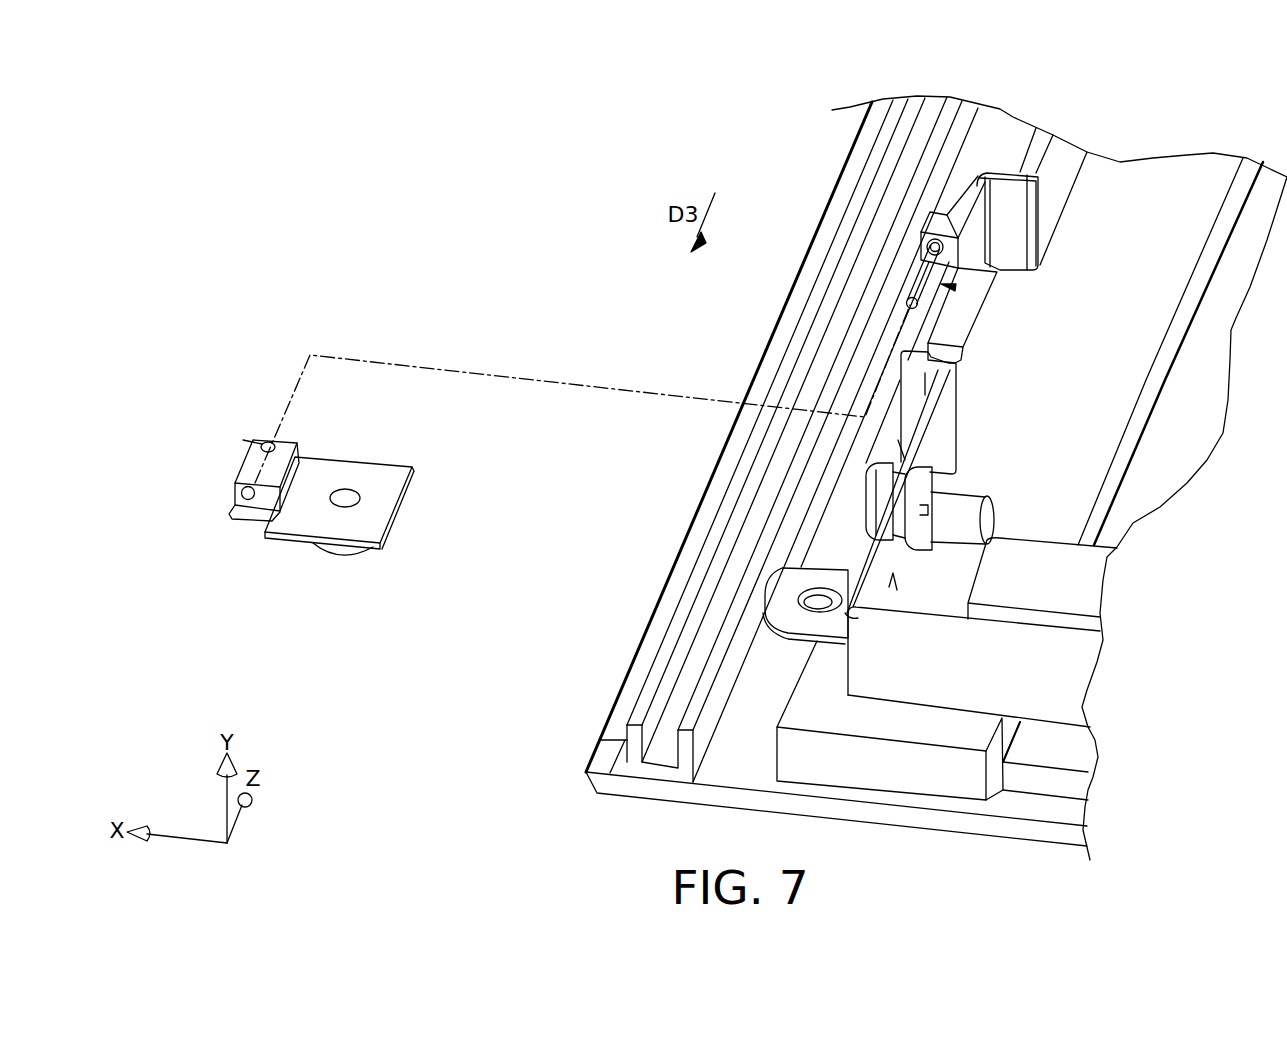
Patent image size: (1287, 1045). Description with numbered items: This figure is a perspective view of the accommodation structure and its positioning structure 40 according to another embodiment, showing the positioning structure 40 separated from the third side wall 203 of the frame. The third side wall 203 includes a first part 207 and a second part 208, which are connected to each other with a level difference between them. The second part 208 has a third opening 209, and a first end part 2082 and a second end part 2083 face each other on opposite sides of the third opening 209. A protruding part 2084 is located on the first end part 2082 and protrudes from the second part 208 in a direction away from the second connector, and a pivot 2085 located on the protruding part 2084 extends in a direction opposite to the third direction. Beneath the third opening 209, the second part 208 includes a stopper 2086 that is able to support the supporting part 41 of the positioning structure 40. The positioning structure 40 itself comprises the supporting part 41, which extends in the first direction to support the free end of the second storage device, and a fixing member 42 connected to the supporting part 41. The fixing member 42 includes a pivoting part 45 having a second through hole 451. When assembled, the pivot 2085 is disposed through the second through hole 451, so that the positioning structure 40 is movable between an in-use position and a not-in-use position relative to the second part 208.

The third side wall 203 is at (868, 556).
The first part 207 is at (1053, 177).
The second part 208 is at (978, 205).
The protruding part 2084 is at (947, 223).
The first end part 2082 is at (1010, 213).
The pivot 2085 is at (908, 293).
The third opening 209 is at (958, 288).
The stopper 2086 is at (942, 327).
The second end part 2083 is at (925, 378).
The positioning structure 40 is at (413, 520).
The supporting part 41 is at (383, 477).
The fixing member 42 is at (284, 443).
The pivoting part 45 is at (253, 453).
The second through hole 451 is at (243, 502).